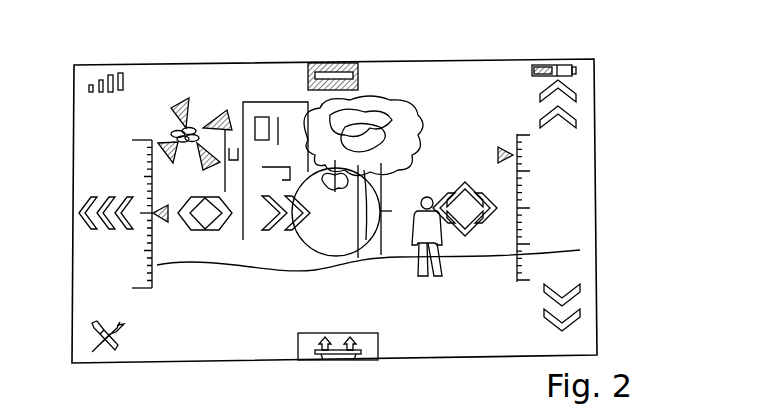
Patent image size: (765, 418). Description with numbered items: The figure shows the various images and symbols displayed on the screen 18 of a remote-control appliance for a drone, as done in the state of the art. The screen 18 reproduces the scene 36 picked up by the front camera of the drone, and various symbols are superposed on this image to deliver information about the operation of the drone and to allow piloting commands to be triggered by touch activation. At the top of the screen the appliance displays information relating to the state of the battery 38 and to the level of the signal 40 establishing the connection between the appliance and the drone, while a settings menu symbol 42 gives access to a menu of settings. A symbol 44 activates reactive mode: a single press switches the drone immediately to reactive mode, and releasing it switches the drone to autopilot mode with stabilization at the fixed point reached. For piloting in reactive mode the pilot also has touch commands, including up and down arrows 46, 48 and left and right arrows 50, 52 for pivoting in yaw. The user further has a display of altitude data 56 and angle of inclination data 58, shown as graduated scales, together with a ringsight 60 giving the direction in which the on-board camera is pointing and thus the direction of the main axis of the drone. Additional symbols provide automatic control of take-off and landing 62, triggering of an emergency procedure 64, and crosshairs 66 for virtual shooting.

The screen 18 is at (458, 78).
The scene 36 is at (443, 270).
The battery state information 38 is at (563, 65).
The signal level information 40 is at (110, 77).
The settings menu symbol 42 is at (100, 350).
The reactive mode activation symbol 44 is at (196, 227).
The up arrow 46 is at (576, 120).
The down arrow 48 is at (577, 320).
The left arrow 50 is at (96, 228).
The right arrow 52 is at (302, 231).
The altitude data display 56 is at (512, 269).
The angle of inclination data display 58 is at (158, 267).
The ringsight 60 is at (340, 258).
The take-off and landing control symbol 62 is at (305, 346).
The emergency procedure symbol 64 is at (306, 63).
The crosshairs 66 is at (223, 113).